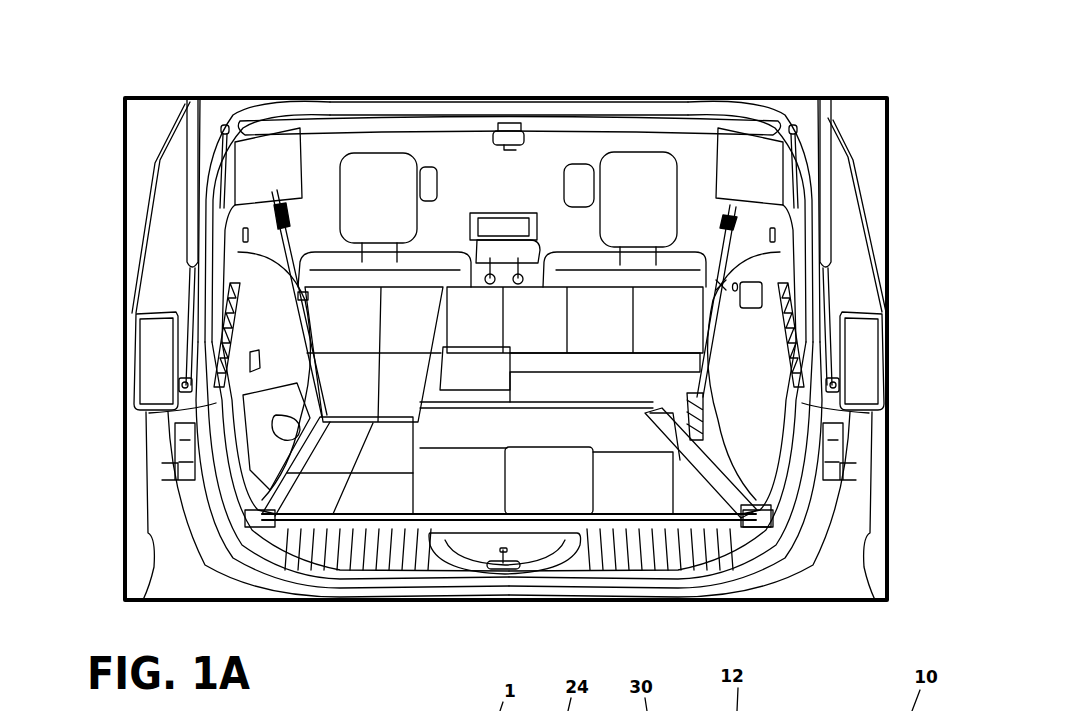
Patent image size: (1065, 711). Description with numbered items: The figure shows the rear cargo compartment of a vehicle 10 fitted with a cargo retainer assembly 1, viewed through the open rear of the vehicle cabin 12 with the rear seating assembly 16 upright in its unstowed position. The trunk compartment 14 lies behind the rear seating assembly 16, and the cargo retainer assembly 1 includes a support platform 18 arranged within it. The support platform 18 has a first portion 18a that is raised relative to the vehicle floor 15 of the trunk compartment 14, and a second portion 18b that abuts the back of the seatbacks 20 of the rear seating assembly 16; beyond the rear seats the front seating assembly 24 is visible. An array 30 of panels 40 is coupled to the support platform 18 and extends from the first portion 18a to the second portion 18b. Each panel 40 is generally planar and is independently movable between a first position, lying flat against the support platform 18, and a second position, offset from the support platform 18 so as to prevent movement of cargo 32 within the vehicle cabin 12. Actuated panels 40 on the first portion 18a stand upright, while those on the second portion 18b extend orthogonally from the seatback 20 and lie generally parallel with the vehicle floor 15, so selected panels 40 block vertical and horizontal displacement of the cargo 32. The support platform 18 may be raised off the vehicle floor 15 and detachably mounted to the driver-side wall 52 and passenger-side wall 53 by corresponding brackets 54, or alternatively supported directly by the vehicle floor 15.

The cargo retainer assembly 1 is at (537, 273).
The vehicle 10 is at (852, 125).
The vehicle cabin 12 is at (694, 194).
The trunk compartment 14 is at (470, 473).
The vehicle floor 15 is at (612, 540).
The rear seating assembly 16 is at (480, 317).
The support platform 18 is at (712, 286).
The first portion 18a is at (292, 496).
The second portion 18b is at (292, 292).
The seatback 20 is at (535, 298).
The front seating assembly 24 is at (547, 223).
The array 30 is at (620, 306).
The cargo 32 is at (455, 548).
The panel 40 is at (368, 395).
The driver-side wall 52 is at (272, 425).
The passenger-side wall 53 is at (733, 342).
The bracket 54 is at (245, 527).